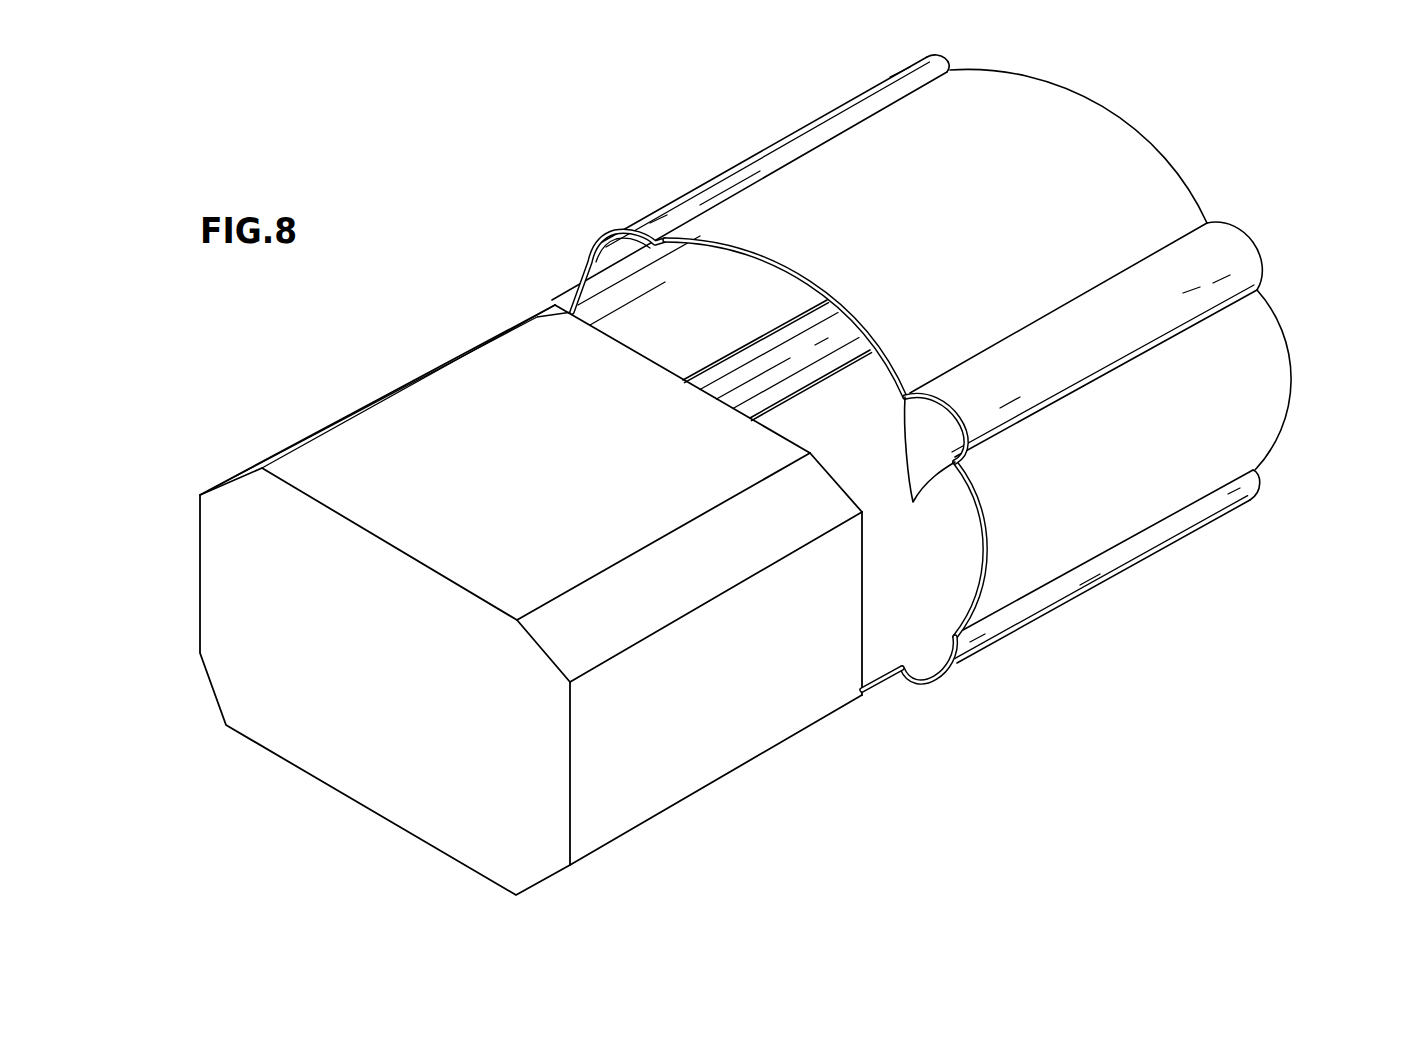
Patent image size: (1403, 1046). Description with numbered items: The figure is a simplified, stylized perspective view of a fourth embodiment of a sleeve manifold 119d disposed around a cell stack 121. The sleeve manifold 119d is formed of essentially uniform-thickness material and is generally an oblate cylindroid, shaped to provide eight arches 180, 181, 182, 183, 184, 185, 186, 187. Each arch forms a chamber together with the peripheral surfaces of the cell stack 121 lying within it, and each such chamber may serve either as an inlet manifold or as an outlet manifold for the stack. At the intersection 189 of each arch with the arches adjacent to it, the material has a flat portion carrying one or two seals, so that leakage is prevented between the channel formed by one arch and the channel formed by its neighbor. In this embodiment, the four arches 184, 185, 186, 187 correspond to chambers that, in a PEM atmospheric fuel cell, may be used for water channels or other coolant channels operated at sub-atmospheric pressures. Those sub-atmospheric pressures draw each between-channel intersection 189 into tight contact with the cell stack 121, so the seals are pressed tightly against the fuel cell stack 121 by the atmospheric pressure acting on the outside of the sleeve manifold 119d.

The sleeve manifold 119d is at (838, 269).
The cell stack 121 is at (343, 748).
The arch 180 is at (880, 687).
The arch 181 is at (800, 263).
The arch 182 is at (995, 537).
The arch 183 is at (563, 297).
The arch 184 is at (1232, 257).
The arch 185 is at (764, 372).
The arch 186 is at (1213, 517).
The arch 187 is at (893, 80).
The intersection 189 is at (900, 667).